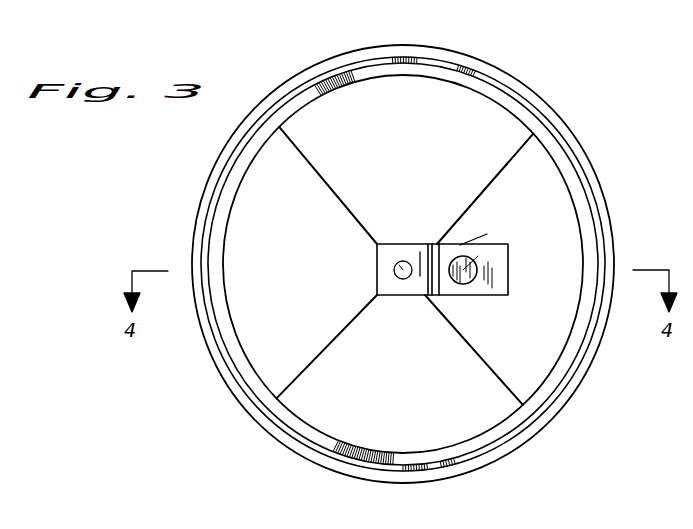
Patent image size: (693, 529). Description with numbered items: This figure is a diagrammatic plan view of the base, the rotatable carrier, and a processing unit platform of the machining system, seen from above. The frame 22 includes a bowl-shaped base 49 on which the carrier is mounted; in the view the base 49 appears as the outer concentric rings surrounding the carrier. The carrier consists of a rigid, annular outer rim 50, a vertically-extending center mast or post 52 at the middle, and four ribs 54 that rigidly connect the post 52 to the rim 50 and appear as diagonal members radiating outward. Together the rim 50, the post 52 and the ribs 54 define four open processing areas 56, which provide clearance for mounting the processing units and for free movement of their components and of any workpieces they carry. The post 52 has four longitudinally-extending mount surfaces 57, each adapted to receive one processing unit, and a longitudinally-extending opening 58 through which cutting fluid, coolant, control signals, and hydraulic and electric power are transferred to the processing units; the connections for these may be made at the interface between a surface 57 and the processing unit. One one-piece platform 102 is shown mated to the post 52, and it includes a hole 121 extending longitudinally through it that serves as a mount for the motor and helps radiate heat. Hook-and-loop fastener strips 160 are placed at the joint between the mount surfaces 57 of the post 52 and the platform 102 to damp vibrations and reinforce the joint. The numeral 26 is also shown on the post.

The frame 22 is at (512, 454).
The shaft 26 is at (426, 295).
The bowl-shaped base 49 is at (594, 193).
The annular outer rim 50 is at (584, 144).
The center mast or post 52 is at (413, 244).
The ribs 54 is at (325, 181).
The open processing areas 56 is at (494, 114).
The mount surfaces 57 is at (392, 244).
The longitudinally-extending opening 58 is at (403, 270).
The platform 102 is at (488, 234).
The hole 121 is at (465, 268).
The strips 160 is at (452, 260).